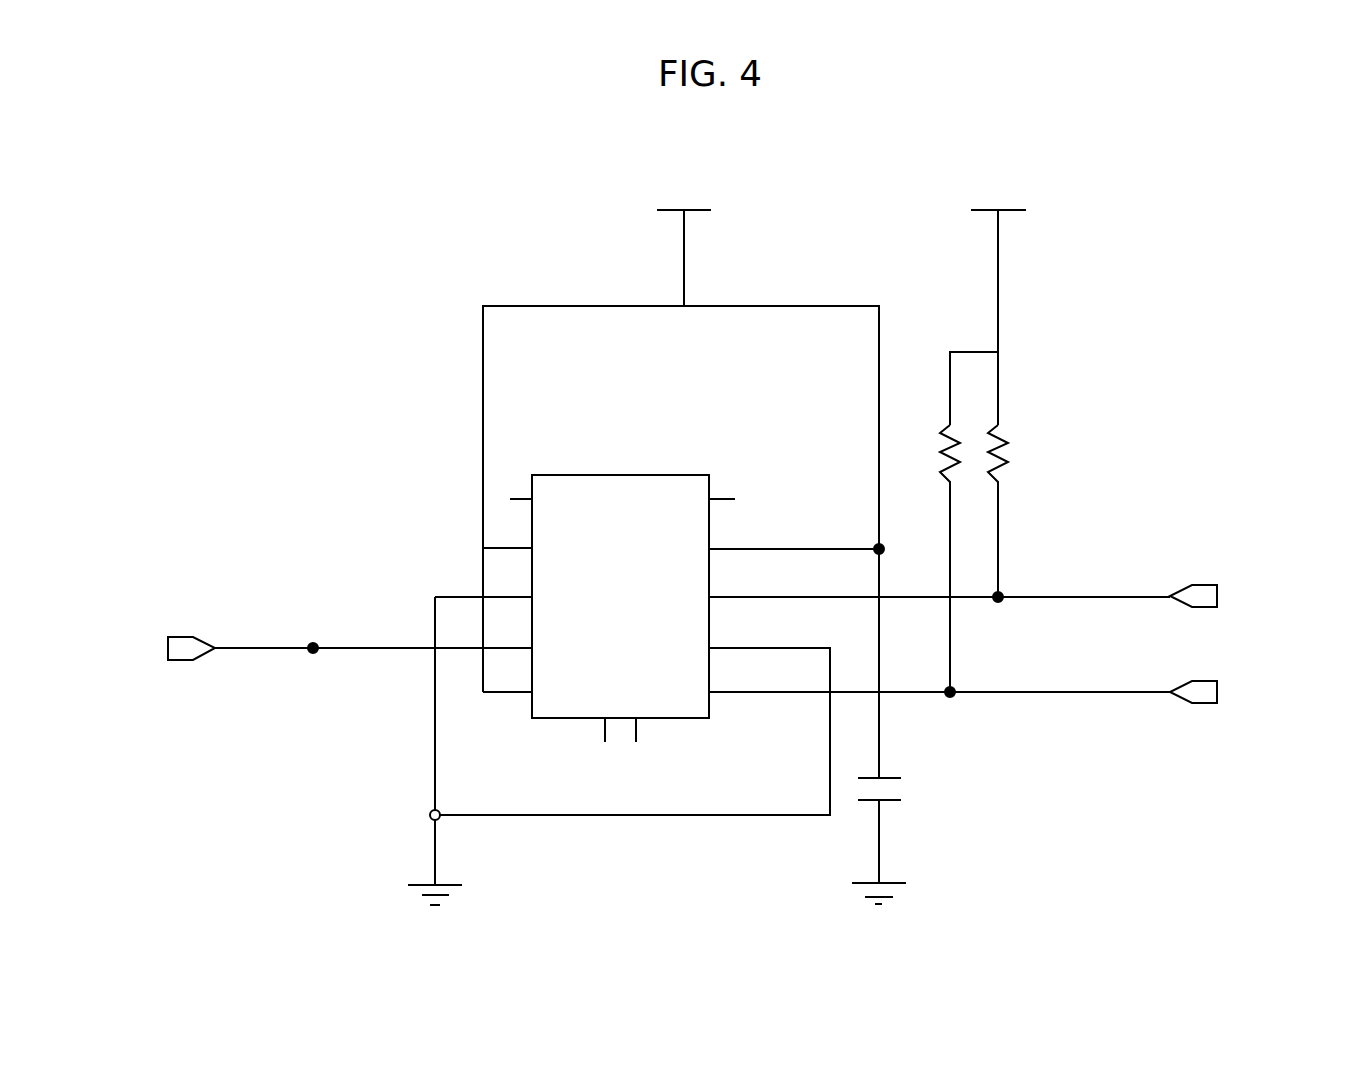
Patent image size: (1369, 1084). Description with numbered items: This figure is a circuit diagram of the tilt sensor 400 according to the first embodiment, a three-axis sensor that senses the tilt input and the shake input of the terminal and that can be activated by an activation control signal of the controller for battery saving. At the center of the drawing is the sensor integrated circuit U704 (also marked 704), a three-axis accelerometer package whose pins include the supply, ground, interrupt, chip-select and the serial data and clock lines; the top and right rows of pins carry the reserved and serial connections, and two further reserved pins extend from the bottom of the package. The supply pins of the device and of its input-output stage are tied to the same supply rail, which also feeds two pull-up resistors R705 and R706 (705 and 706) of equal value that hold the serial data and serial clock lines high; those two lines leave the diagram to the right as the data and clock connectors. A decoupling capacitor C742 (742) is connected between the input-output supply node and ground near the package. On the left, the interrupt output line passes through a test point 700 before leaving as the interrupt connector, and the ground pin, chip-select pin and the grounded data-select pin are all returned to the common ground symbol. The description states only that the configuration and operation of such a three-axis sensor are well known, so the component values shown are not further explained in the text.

The tilt sensor 400 is at (1195, 190).
The acceleration sensor IC BMA023 U704 is at (620, 568).
The acceleration sensor IC BMA023 704 is at (620, 568).
The pull-up resistor 2.2K R705 is at (943, 522).
The pull-up resistor 2.2K 705 is at (943, 522).
The pull-up resistor 2.2K R706 is at (1026, 474).
The pull-up resistor 2.2K 706 is at (1026, 474).
The decoupling capacitor 1000nF C742 is at (913, 726).
The decoupling capacitor 1000nF 742 is at (913, 726).
The test point 700 is at (288, 627).